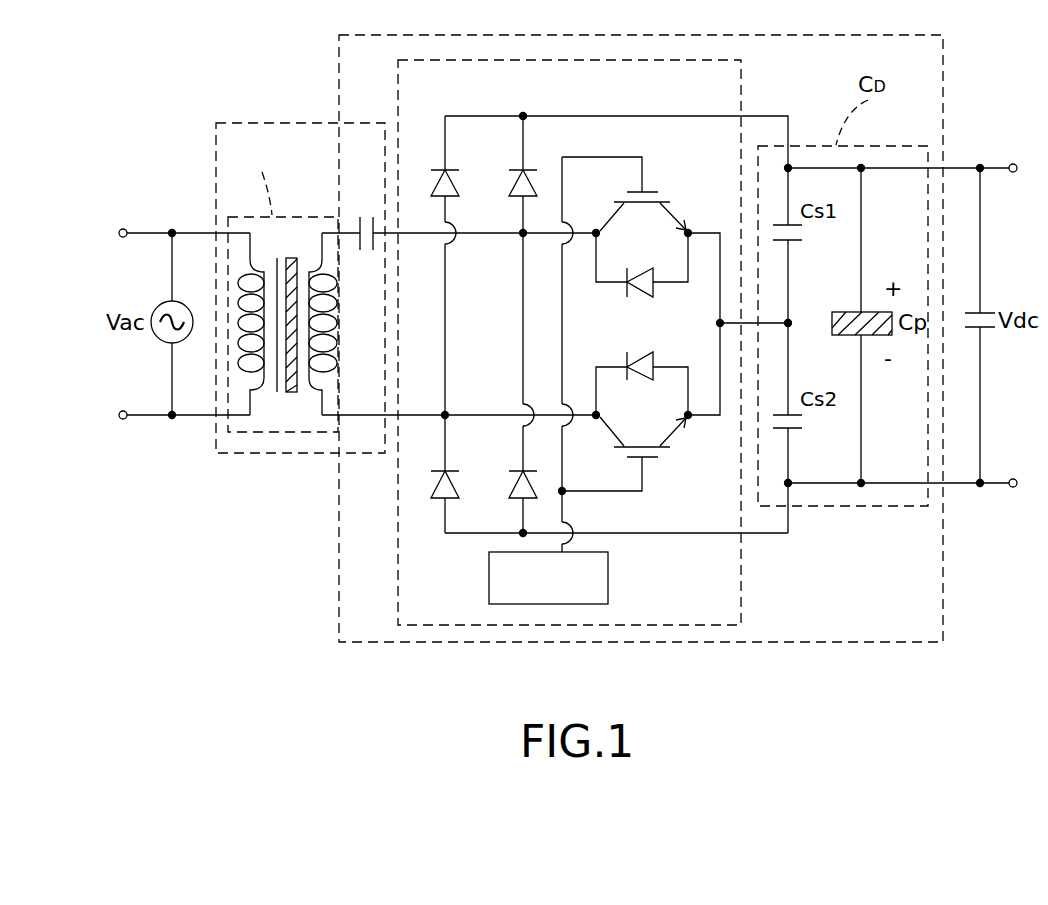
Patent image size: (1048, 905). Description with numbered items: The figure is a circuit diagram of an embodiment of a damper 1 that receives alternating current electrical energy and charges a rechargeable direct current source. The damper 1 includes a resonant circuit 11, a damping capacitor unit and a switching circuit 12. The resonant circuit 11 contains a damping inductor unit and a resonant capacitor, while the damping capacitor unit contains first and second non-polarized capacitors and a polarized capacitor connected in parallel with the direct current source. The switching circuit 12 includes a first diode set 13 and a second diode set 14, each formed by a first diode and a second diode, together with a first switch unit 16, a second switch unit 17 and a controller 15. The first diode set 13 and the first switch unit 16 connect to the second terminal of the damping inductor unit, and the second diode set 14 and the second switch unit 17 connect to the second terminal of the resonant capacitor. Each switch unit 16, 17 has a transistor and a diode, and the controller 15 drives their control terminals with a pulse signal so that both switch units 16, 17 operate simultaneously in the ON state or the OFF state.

The damper 1 is at (338, 52).
The resonant circuit 11 is at (362, 120).
The switching circuit 12 is at (742, 82).
The first diode set 13 is at (456, 150).
The second diode set 14 is at (535, 150).
The controller 15 is at (608, 573).
The first switch unit 16 is at (684, 497).
The second switch unit 17 is at (686, 150).